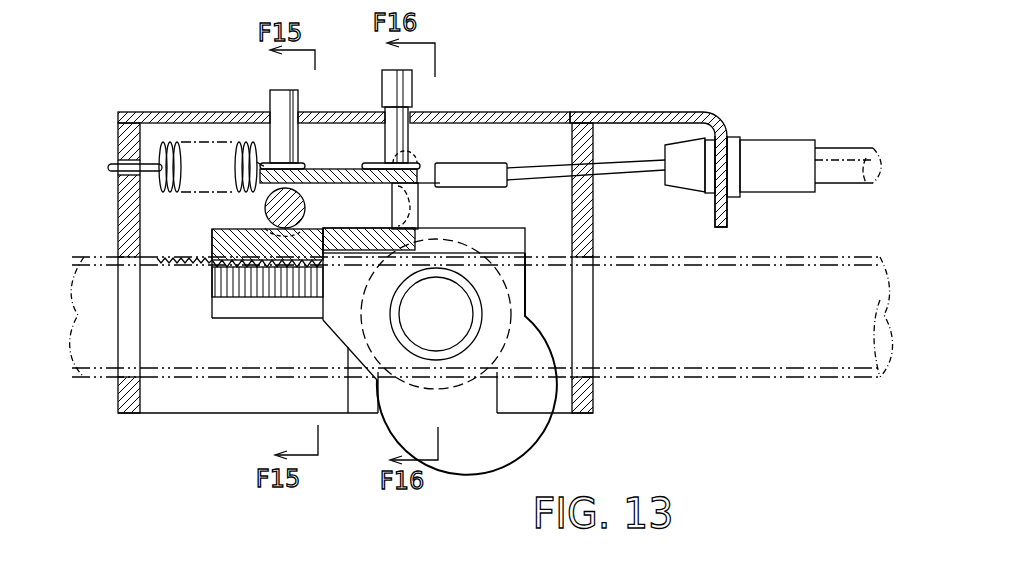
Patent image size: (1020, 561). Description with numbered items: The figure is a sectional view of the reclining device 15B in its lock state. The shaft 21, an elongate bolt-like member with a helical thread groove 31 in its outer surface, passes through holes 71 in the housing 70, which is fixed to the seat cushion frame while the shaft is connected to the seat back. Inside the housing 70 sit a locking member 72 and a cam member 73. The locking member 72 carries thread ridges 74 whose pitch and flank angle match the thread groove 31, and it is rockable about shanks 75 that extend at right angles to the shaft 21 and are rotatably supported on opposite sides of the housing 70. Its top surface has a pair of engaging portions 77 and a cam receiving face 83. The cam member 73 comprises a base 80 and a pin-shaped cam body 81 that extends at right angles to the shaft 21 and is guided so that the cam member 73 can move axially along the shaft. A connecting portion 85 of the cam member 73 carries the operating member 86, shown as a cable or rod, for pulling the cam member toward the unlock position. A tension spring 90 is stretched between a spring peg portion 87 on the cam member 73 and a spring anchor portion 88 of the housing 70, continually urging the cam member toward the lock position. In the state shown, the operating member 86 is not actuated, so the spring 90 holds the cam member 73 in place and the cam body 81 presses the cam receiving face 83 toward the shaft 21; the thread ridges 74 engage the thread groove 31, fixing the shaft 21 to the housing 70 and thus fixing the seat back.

The shaft 21 is at (672, 350).
The thread groove 31 is at (200, 258).
The housing 70 is at (578, 112).
The holes 71 is at (127, 293).
The locking member 72 is at (213, 322).
The cam member 73 is at (423, 155).
The thread ridges 74 is at (272, 290).
The shanks 75 is at (477, 357).
The engaging portions 77 is at (420, 190).
The base 80 is at (324, 176).
The cam body 81 is at (265, 213).
The cam receiving face 83 is at (313, 228).
The connecting portion 85 is at (393, 143).
The operating member 86 is at (627, 165).
The spring peg portion 87 is at (270, 105).
The spring anchor portion 88 is at (117, 150).
The tension spring 90 is at (200, 140).
The reclining device 15B is at (698, 82).